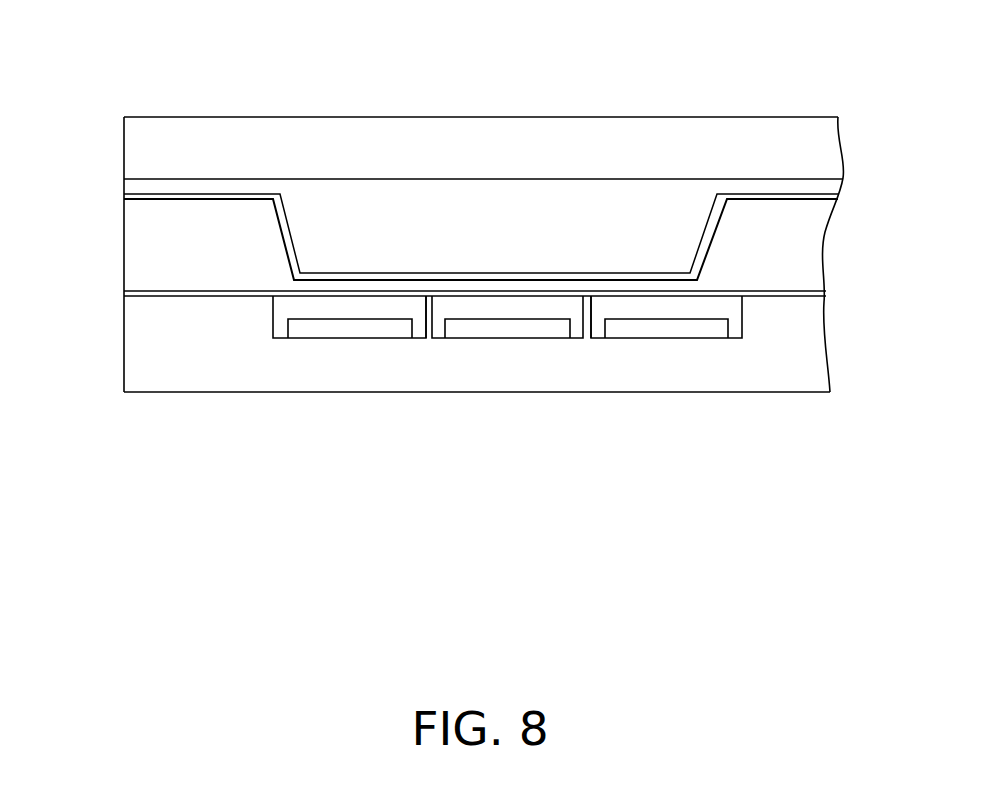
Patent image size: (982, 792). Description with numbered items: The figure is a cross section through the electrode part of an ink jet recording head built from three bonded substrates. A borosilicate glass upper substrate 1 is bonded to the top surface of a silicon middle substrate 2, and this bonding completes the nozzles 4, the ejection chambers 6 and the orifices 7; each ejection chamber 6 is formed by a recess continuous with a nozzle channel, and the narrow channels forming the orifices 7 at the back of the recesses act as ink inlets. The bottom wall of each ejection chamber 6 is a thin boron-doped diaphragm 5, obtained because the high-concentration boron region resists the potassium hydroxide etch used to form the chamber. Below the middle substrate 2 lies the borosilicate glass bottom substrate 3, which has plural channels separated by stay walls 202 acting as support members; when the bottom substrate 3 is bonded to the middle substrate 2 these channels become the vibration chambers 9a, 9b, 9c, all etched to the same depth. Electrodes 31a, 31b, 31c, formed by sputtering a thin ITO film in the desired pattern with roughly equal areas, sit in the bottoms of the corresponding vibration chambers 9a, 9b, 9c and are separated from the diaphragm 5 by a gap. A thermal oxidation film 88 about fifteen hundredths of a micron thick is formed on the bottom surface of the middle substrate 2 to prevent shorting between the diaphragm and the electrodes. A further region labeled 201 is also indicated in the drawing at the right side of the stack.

The upper substrate 1 is at (158, 128).
The middle substrate 2 is at (153, 233).
The bottom substrate 3 is at (138, 363).
The nozzle 4 is at (124, 193).
The diaphragm 5 is at (442, 287).
The ejection chamber 6 is at (598, 208).
The orifice 7 is at (818, 185).
The thermal oxidation film 88 is at (124, 293).
The spacer portion 201 is at (755, 215).
The stay wall 202 is at (418, 325).
The vibration chamber 9a is at (278, 315).
The vibration chamber 9b is at (444, 333).
The vibration chamber 9c is at (707, 305).
The electrode 31a is at (323, 328).
The electrode 31b is at (530, 328).
The electrode 31c is at (690, 327).